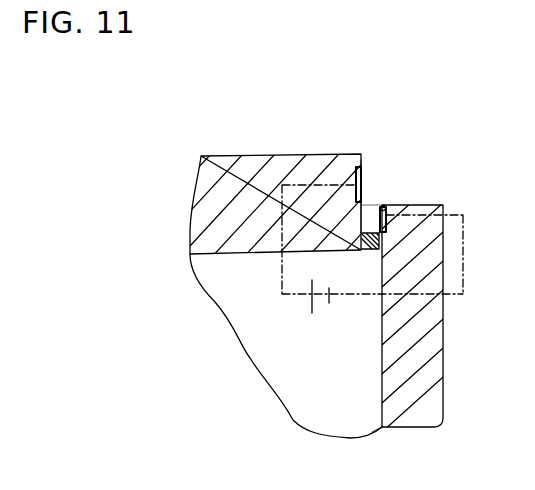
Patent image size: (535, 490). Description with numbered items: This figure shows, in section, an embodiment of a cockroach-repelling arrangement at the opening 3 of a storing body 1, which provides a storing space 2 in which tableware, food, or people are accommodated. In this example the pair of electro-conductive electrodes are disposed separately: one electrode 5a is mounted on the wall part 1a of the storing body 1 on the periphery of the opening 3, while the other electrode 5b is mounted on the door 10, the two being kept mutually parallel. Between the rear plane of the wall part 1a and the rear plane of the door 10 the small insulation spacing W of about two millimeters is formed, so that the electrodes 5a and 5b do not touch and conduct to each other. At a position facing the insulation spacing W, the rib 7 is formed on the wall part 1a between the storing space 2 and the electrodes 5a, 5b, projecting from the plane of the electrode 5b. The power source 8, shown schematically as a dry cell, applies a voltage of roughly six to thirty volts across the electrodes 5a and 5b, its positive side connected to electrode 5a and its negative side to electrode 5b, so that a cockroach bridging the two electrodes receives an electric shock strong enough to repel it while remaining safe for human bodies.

The storing body 1 is at (247, 145).
The wall part 1a is at (360, 218).
The storing space 2 is at (318, 391).
The opening 3 is at (372, 423).
The electrode 5a is at (362, 168).
The electrode 5b is at (390, 205).
The rib 7 is at (370, 250).
The power source 8 is at (312, 307).
The door 10 is at (430, 342).
The insulation spacing W is at (367, 208).